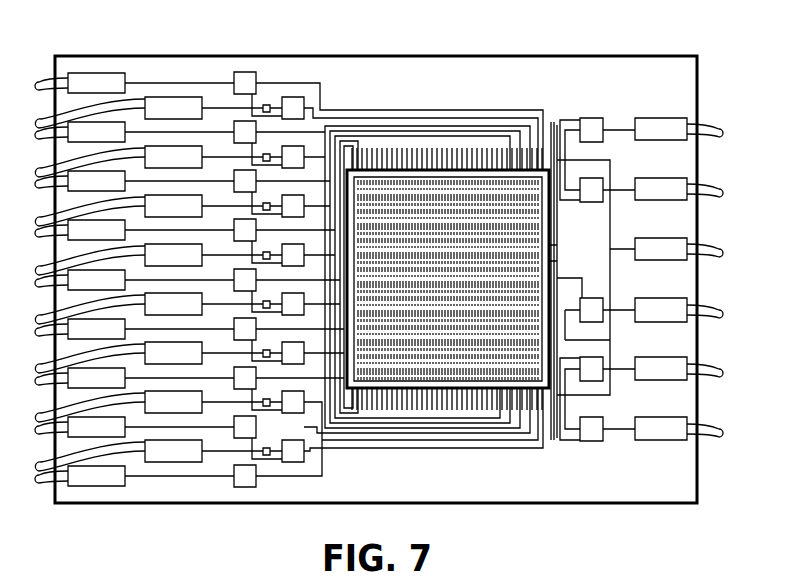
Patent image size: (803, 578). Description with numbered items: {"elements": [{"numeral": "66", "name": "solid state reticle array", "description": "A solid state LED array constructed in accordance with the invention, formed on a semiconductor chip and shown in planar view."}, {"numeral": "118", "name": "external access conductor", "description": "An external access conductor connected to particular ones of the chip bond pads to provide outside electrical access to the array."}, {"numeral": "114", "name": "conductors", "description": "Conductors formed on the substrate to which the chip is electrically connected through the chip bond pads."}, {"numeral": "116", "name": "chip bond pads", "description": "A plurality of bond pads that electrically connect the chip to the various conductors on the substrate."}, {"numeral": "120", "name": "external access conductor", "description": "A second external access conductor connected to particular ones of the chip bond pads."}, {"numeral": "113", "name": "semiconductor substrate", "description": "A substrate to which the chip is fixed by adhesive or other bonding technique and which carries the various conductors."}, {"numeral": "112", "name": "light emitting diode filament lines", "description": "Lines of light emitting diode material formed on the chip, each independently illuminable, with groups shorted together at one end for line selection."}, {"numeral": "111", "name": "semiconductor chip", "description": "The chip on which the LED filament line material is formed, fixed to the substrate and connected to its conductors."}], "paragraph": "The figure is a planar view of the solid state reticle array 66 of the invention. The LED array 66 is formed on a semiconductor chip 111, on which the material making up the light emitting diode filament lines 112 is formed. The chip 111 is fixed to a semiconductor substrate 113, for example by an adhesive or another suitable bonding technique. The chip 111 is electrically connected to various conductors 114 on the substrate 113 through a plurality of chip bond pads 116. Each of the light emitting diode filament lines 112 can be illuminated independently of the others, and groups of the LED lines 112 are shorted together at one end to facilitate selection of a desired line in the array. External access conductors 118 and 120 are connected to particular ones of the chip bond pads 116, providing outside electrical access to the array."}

The circuit board 66 is at (611, 53).
The terminal pad 118 is at (247, 80).
The bonding leads 114 is at (443, 128).
The bonding leads 116 is at (537, 160).
The terminal pad 120 is at (598, 118).
The edge connector leads 113 is at (700, 85).
The integrated circuit chip 112 is at (525, 235).
The chip edge connection 111 is at (553, 253).